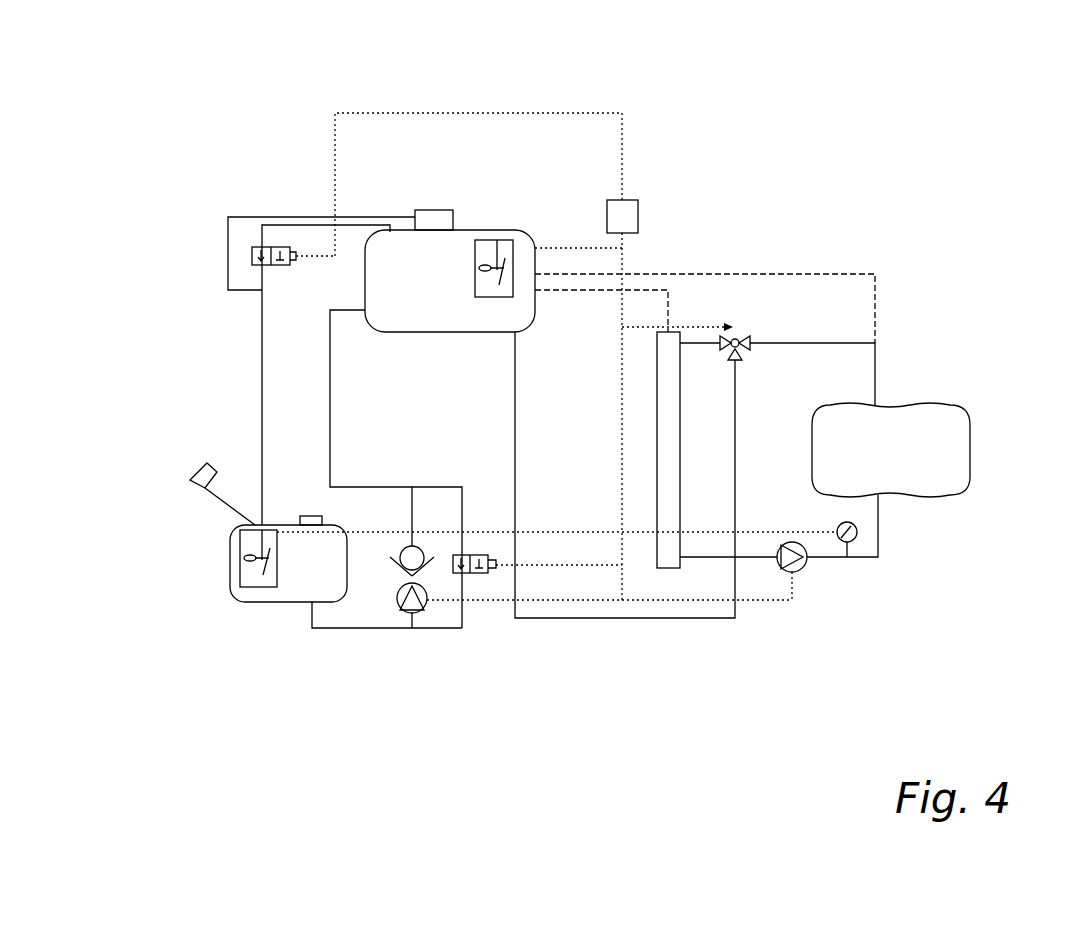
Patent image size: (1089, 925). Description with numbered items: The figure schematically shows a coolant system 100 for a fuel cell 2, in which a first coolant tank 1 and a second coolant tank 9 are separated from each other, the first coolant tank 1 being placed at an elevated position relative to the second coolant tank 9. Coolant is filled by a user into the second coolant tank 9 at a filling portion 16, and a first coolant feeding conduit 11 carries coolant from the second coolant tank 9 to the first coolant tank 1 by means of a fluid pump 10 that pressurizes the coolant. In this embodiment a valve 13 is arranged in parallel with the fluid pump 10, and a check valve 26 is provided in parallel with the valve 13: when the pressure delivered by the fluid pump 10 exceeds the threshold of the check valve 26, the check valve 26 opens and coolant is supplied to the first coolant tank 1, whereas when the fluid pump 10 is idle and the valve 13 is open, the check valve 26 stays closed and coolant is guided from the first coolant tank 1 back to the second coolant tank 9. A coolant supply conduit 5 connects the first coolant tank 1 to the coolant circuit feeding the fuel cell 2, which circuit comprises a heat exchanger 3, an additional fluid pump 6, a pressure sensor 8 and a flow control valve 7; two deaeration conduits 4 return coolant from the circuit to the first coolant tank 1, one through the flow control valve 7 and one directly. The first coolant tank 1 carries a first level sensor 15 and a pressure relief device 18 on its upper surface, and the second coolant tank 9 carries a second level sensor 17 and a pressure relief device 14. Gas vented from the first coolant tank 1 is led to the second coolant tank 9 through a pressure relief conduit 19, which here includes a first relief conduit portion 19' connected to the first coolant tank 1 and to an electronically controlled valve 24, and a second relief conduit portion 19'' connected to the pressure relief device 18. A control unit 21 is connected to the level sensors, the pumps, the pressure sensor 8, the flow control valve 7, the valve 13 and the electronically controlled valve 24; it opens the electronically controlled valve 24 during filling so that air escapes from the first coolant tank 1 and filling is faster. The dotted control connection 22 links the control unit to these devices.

The coolant system 100 is at (206, 174).
The first coolant tank 1 is at (475, 230).
The fuel cell 2 is at (970, 450).
The heat exchanger 3 is at (662, 568).
The deaeration conduits 4 is at (600, 290).
The coolant supply conduit 5 is at (515, 368).
The additional fluid pump 6 is at (803, 572).
The flow control valve 7 is at (747, 337).
The pressure sensor 8 is at (857, 528).
The second coolant tank 9 is at (308, 605).
The fluid pump 10 is at (425, 608).
The first coolant feeding conduit 11 is at (330, 373).
The valve 13 is at (478, 577).
The pressure relief device 14 is at (309, 515).
The first level sensor 15 is at (503, 240).
The filling portion 16 is at (192, 467).
The second level sensor 17 is at (250, 590).
The pressure relief device 18 is at (433, 209).
The pressure relief conduit 19 is at (279, 375).
The first relief conduit portion 19' is at (287, 257).
The second relief conduit portion 19'' is at (478, 145).
The control unit 21 is at (632, 200).
The control line 22 is at (622, 353).
The electronically controlled valve 24 is at (280, 248).
The check valve 26 is at (427, 562).